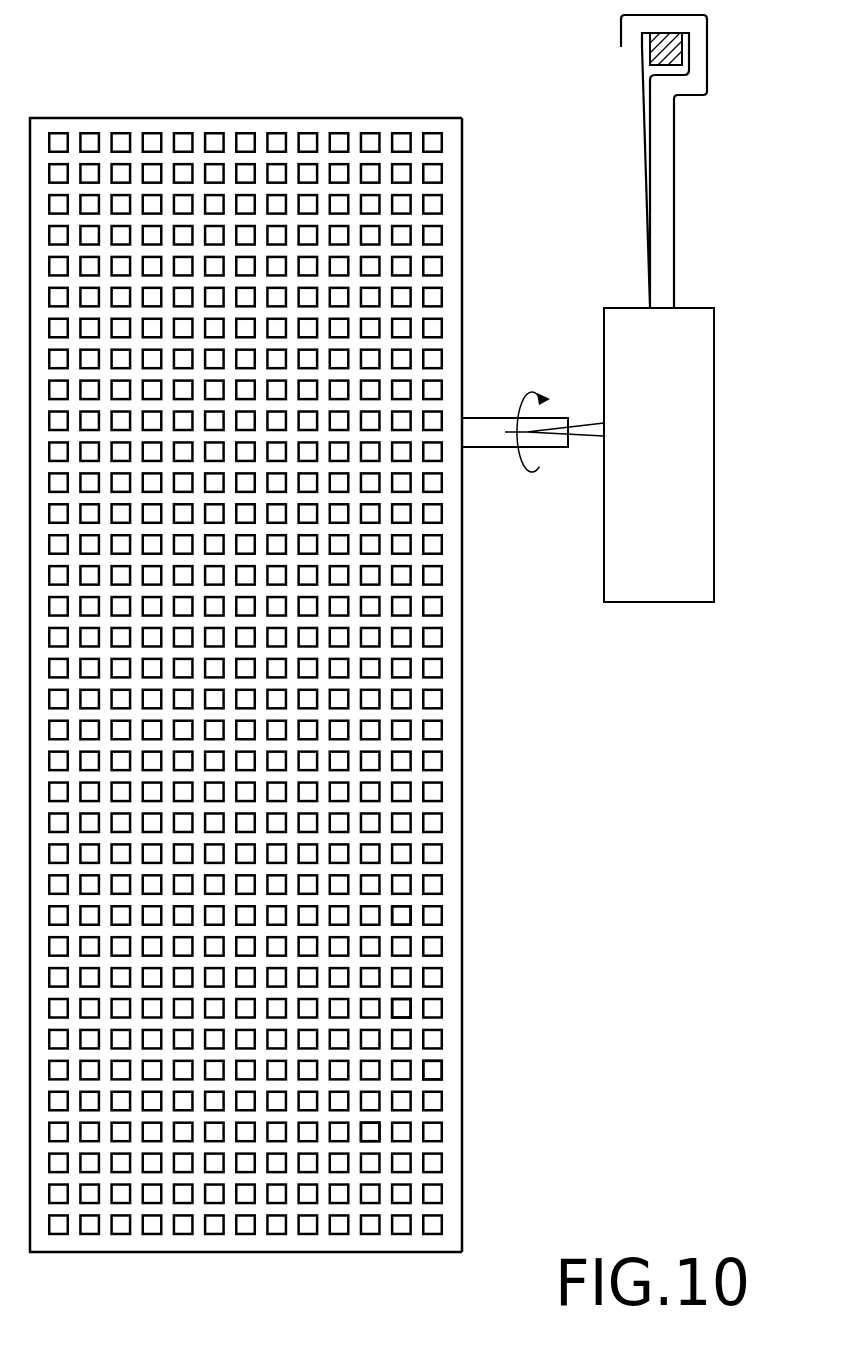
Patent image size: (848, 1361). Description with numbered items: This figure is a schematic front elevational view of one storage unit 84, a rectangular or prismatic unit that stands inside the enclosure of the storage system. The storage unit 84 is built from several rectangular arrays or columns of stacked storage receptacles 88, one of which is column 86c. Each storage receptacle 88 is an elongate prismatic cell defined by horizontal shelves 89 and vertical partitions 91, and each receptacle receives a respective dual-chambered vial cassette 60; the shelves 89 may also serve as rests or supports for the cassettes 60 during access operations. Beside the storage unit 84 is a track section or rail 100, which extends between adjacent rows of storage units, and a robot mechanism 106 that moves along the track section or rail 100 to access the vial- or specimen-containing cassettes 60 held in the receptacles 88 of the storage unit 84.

The storage unit 84 is at (482, 628).
The column of stacked storage receptacles 86c is at (472, 1148).
The storage receptacle 88 is at (372, 757).
The horizontal shelf 89 is at (402, 1015).
The vertical partition 91 is at (363, 1130).
The dual-chambered vial cassette 60 is at (477, 420).
The robot mechanism 106 is at (623, 327).
The track section or rail 100 is at (650, 65).